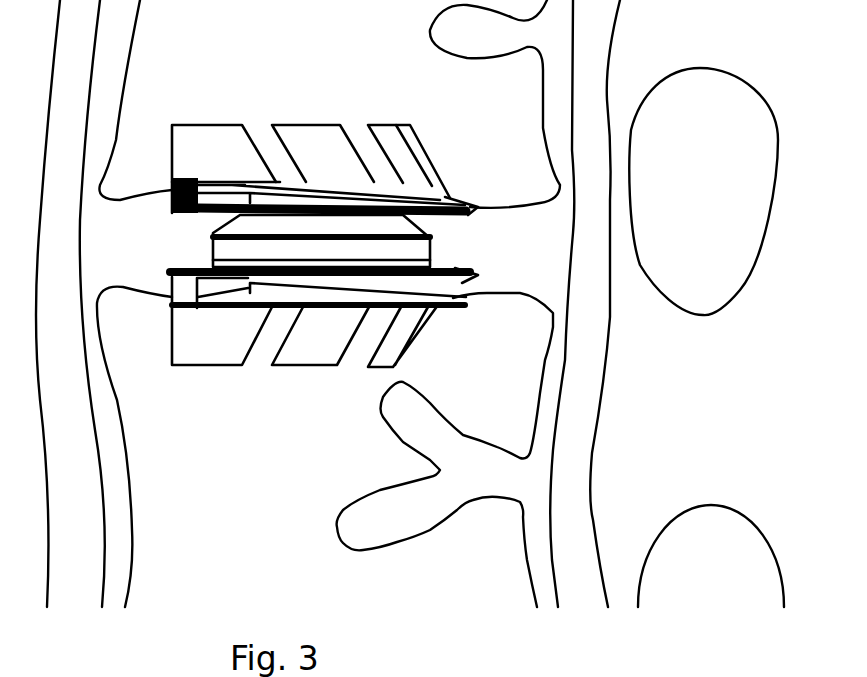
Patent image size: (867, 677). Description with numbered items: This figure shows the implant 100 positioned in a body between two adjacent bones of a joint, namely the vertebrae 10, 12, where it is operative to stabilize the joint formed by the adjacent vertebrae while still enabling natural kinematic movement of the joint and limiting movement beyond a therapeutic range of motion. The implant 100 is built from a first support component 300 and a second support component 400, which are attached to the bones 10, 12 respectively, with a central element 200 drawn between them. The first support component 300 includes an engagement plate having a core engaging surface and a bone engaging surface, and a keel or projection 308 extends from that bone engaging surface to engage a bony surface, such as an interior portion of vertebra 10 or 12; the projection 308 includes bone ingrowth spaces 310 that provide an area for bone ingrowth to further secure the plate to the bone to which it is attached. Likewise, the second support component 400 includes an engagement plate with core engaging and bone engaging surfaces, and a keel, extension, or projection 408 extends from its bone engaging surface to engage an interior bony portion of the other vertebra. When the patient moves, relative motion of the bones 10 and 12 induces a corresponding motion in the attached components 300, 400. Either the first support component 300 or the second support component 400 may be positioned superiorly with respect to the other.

The vertebra 10 is at (435, 106).
The vertebra 12 is at (300, 425).
The implant 100 is at (297, 124).
The intervertebral spacer body 200 is at (204, 248).
The first support component 300 is at (165, 158).
The projection 308 is at (392, 135).
The bone ingrowth spaces 310 is at (360, 140).
The second support component 400 is at (431, 347).
The projection 408 is at (197, 345).